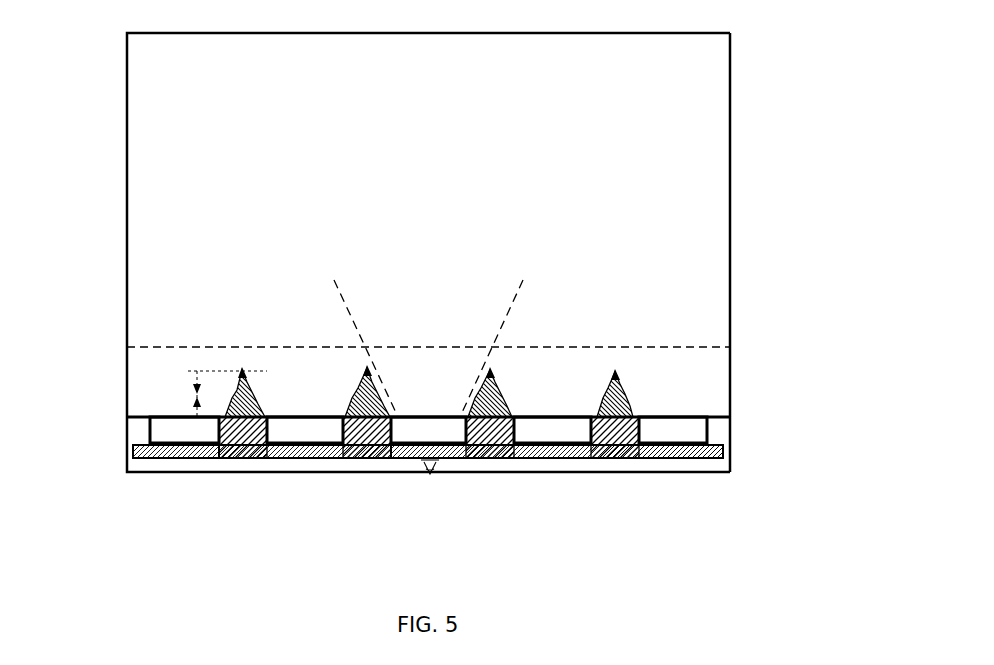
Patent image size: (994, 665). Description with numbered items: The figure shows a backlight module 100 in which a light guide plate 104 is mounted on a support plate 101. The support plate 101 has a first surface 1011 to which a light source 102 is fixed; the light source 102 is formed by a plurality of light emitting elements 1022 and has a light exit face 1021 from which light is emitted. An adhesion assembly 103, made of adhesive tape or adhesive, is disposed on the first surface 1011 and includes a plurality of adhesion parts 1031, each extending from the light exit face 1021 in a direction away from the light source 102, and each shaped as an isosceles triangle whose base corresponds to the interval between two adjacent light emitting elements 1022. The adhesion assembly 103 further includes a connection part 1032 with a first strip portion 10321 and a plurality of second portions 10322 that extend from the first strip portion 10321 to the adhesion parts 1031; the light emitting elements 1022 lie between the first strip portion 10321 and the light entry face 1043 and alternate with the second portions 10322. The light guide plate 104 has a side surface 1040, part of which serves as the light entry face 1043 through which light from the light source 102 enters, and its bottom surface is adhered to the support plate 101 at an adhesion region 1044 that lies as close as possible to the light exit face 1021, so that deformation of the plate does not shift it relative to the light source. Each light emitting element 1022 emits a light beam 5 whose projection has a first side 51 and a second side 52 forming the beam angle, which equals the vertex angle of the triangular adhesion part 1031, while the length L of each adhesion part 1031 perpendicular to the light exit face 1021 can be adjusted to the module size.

The backlight module 100 is at (172, 20).
The light guide plate 104 is at (428, 252).
The side surface 1040 is at (730, 240).
The light entry face 1043 is at (682, 416).
The adhesion region 1044 is at (635, 425).
The support plate 101 is at (103, 347).
The light source 102 is at (575, 457).
The light emitting element 1022 is at (628, 447).
The light exit face 1021 is at (677, 457).
The first strip portion 10321 is at (700, 458).
The second portion 10322 is at (232, 455).
The first surface 1011 is at (247, 463).
The adhesion assembly 103 is at (305, 545).
The adhesion part 1031 is at (273, 455).
The connection part 1032 is at (400, 457).
The light beam 5 is at (473, 318).
The first side 51 is at (355, 320).
The second side 52 is at (493, 340).
The length of the adhesion part L is at (221, 394).